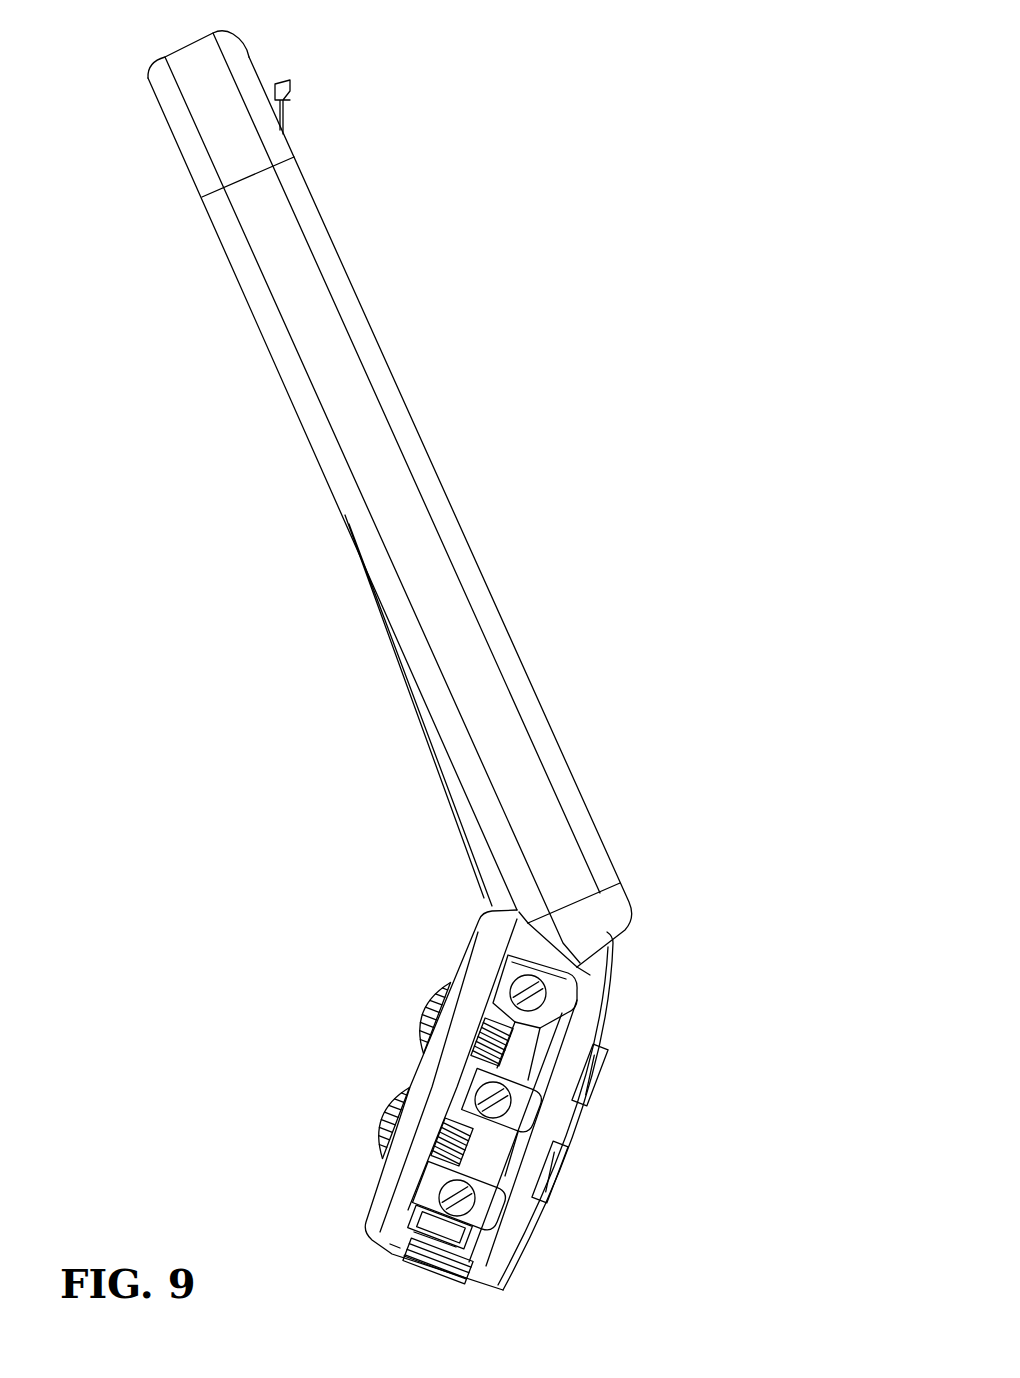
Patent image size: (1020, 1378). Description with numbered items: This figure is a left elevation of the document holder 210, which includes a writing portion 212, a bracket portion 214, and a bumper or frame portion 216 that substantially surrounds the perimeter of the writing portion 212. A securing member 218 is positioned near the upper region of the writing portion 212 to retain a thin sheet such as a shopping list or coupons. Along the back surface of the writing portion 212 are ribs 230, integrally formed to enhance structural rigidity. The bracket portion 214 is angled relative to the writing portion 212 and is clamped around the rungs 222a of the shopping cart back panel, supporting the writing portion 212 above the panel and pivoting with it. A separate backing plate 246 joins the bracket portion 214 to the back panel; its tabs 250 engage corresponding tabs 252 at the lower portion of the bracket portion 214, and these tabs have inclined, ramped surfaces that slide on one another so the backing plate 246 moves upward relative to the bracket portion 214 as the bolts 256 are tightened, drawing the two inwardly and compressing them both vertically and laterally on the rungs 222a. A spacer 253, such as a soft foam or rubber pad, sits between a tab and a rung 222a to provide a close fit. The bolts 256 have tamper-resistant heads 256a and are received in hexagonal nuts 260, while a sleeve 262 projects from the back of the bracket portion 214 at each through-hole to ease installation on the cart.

The document holder 210 is at (673, 128).
The writing portion 212 is at (512, 377).
The bracket portion 214 is at (702, 1034).
The frame portion 216 is at (290, 374).
The securing member 218 is at (287, 108).
The ribs 230 is at (446, 790).
The rungs 222a is at (480, 1083).
The backing plate 246 is at (374, 1203).
The tabs 250 is at (433, 1248).
The tabs 252 is at (413, 1262).
The spacer 253 is at (470, 1240).
The fasteners 256 is at (495, 1014).
The tamper-resistant heads 256a is at (428, 1018).
The non-circular fasteners 260 is at (580, 1105).
The sleeve 262 is at (562, 1015).